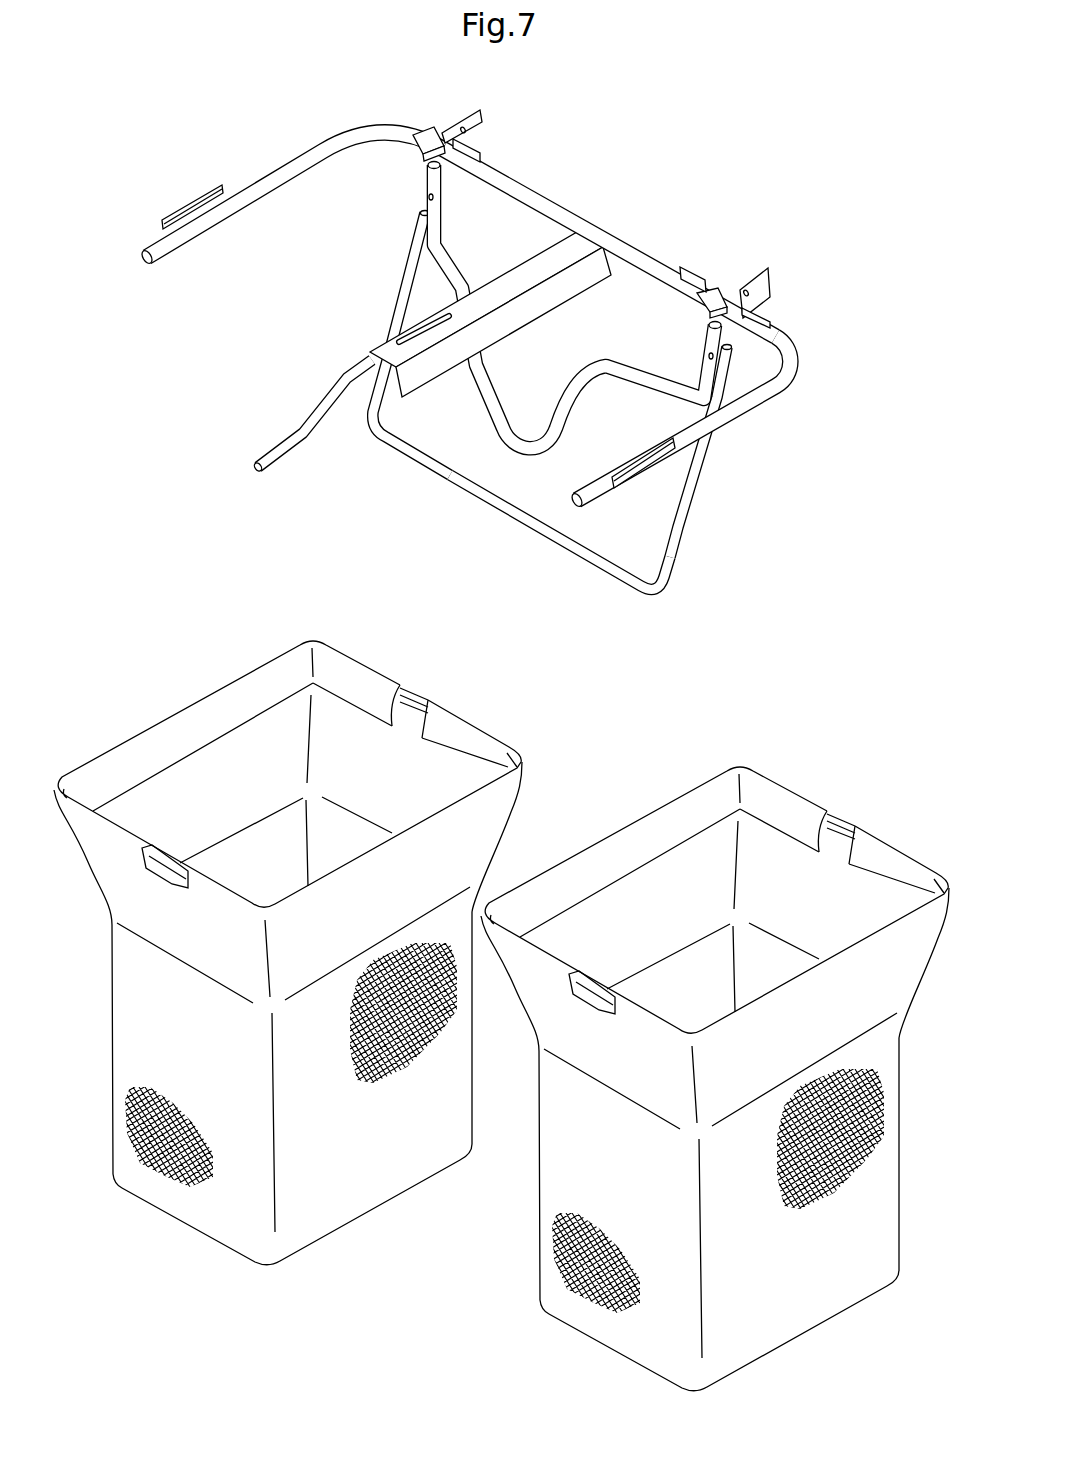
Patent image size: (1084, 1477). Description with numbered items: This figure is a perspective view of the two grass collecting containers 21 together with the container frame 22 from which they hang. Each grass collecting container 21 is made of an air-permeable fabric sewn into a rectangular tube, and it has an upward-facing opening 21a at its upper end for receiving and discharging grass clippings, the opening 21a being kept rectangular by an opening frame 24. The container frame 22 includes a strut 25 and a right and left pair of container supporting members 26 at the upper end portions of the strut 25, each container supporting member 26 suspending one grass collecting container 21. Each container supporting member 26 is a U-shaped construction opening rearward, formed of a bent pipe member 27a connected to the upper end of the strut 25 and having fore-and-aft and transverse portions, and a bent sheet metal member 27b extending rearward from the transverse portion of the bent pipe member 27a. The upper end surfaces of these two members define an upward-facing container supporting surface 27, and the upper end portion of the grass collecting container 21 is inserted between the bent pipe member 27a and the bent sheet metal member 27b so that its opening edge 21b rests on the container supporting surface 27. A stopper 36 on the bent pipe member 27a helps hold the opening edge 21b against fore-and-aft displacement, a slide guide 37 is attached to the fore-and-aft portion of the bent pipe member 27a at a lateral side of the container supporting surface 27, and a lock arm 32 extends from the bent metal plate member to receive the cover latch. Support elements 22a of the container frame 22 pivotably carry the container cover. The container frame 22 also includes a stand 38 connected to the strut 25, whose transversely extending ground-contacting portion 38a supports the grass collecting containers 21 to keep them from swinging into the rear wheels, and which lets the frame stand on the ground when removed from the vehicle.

The grass collecting container 21 is at (355, 1190).
The opening 21a is at (233, 758).
The opening edge 21b is at (257, 672).
The container frame 22 is at (523, 300).
The support element 22a is at (478, 122).
The opening frame 24 is at (413, 693).
The strut 25 is at (573, 414).
The container supporting member 26 is at (535, 192).
The container supporting surface 27 is at (262, 178).
The bent pipe member 27a is at (648, 268).
The bent sheet metal member 27b is at (557, 290).
The lock arm 32 is at (327, 400).
The stopper 36 is at (478, 153).
The slide guide 37 is at (188, 210).
The stand 38 is at (573, 400).
The ground-contacting portion 38a is at (473, 499).